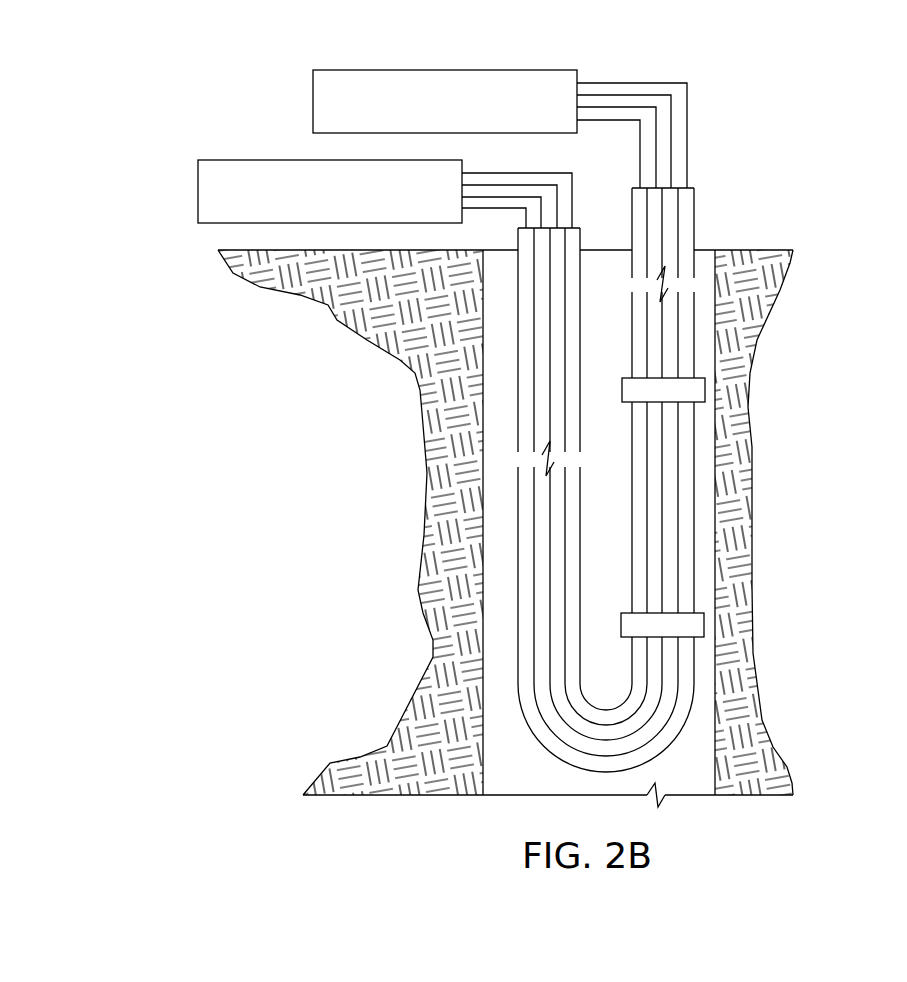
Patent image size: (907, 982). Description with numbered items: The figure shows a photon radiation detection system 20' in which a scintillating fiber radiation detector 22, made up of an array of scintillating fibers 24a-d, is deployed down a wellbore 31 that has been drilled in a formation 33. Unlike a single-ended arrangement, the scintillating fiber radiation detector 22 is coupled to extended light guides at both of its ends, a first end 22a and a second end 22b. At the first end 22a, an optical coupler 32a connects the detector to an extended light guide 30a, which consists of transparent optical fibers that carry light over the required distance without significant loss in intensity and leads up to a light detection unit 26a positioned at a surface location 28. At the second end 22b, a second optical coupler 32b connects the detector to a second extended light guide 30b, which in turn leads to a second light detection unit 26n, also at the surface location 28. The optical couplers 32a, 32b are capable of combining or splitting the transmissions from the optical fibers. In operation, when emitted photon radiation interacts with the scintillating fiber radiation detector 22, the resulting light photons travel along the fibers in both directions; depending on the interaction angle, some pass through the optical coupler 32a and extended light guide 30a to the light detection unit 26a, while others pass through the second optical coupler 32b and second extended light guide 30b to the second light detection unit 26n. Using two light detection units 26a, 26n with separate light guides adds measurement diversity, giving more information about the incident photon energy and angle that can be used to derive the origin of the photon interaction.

The photon radiation detection system 20' is at (817, 70).
The light detection unit 26a is at (463, 70).
The second light detection unit 26n is at (272, 160).
The surface location 28 is at (762, 250).
The formation 33 is at (442, 317).
The wellbore 31 is at (488, 400).
The extended light guide 30a is at (697, 330).
The optical coupler 32a is at (705, 385).
The first end 22a is at (697, 415).
The scintillating fibers 24a-d is at (635, 532).
The scintillating fiber radiation detector 22 is at (697, 570).
The second end 22b is at (697, 600).
The second optical coupler 32b is at (705, 627).
The second extended light guide 30b is at (690, 707).